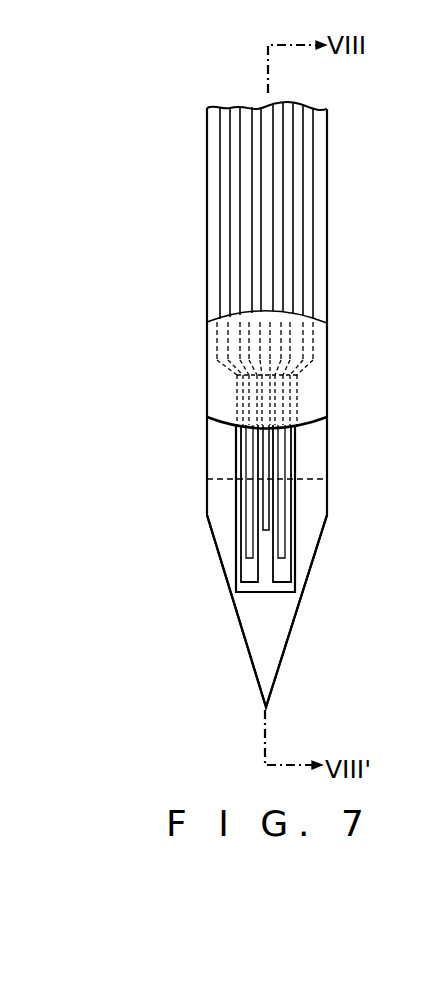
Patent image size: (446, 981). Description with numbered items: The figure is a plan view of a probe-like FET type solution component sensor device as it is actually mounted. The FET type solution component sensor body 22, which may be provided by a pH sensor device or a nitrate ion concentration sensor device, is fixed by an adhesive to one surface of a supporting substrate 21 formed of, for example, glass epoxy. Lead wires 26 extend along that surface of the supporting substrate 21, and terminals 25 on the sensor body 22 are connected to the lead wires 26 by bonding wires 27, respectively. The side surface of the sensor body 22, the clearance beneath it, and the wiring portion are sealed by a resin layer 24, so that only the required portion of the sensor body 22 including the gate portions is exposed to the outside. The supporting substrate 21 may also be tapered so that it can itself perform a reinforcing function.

The supporting substrate 21 is at (323, 195).
The lead wires 26 is at (308, 287).
The bonding wires 27 is at (292, 368).
The terminals 25 is at (300, 388).
The FET type solution component sensor body 22 is at (296, 497).
The resin layer 24 is at (267, 612).